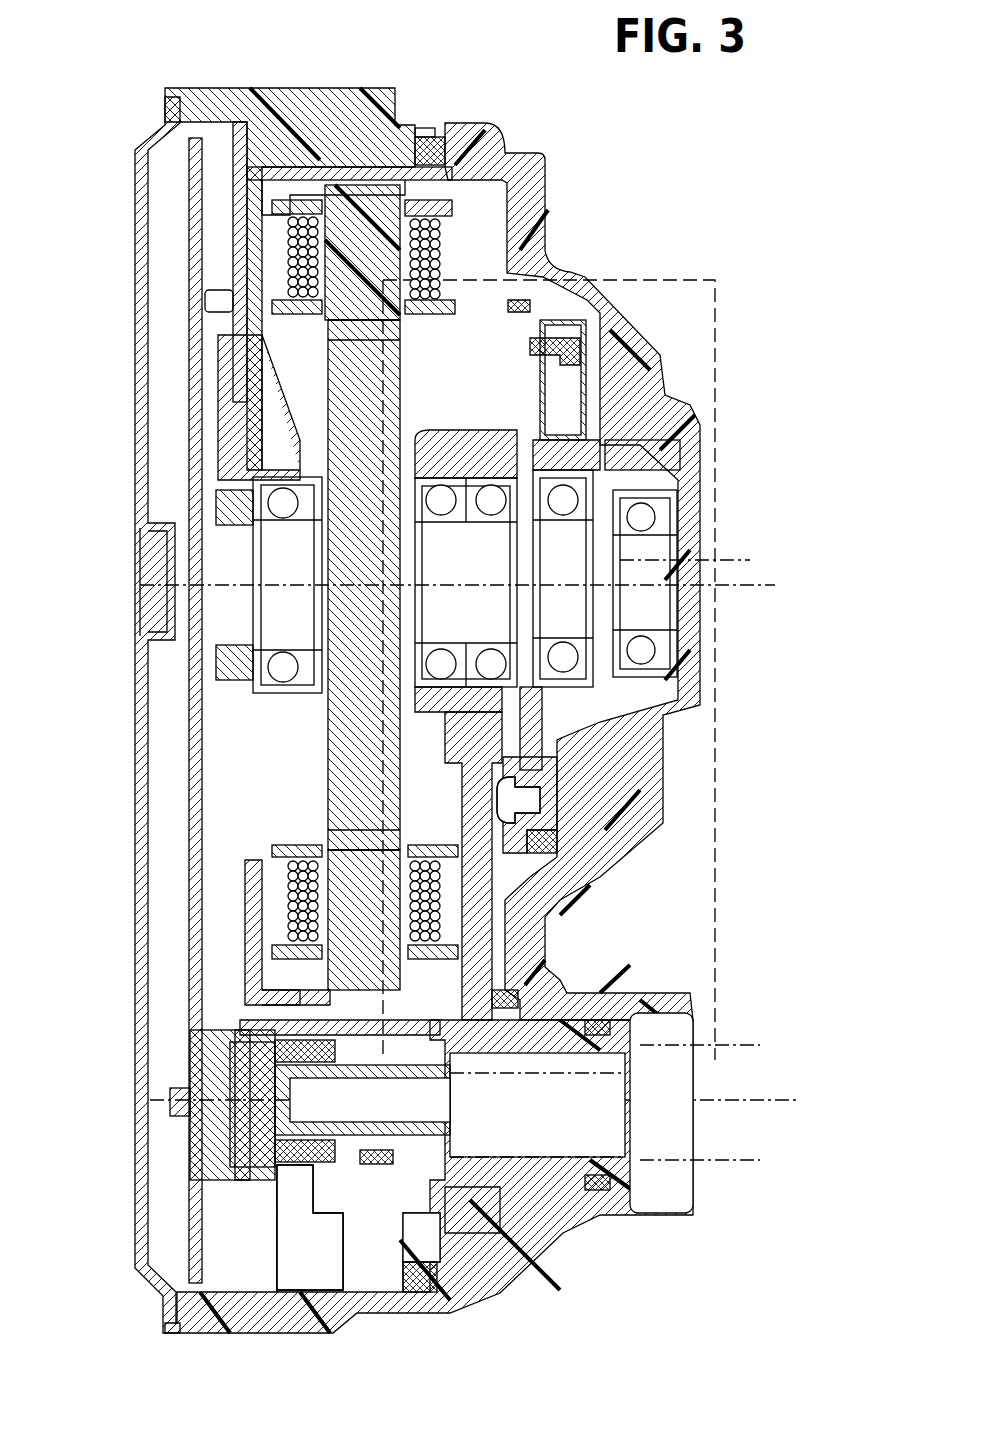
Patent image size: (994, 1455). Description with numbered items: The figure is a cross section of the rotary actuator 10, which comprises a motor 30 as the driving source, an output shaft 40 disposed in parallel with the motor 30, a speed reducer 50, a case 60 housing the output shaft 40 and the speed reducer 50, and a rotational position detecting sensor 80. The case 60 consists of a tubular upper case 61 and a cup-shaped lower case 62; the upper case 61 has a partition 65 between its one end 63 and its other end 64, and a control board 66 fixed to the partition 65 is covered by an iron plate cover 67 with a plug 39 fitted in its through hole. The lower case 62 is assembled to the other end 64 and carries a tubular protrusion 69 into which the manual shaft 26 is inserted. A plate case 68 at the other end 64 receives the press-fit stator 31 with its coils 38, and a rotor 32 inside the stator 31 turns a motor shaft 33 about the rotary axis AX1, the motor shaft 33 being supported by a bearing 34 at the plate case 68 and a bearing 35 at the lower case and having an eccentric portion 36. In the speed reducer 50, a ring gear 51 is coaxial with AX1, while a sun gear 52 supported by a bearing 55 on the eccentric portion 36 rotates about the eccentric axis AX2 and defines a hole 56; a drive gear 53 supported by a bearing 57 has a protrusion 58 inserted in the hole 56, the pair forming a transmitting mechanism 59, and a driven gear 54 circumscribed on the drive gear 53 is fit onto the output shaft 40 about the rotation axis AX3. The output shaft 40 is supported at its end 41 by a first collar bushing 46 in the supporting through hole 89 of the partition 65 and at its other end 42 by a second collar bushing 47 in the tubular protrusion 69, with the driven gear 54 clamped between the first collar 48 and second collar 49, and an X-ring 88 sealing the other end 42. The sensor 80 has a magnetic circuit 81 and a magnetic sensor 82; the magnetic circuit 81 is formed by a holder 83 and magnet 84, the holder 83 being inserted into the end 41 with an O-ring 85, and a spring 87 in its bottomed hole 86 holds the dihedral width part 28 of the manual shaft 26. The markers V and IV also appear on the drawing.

The actuator 10 is at (129, 51).
The manual shaft 26 is at (740, 1150).
The dihedral width part 28 is at (240, 1025).
The motor 30 is at (440, 257).
The stator 31 is at (350, 282).
The rotor 32 is at (350, 790).
The motor shaft 33 is at (275, 548).
The bearing 34 is at (442, 500).
The bearing 35 is at (660, 655).
The eccentric portion 36 is at (665, 522).
The coils 38 is at (300, 235).
The plug 39 is at (150, 580).
The output shaft 40 is at (550, 960).
The end 41 is at (300, 950).
The other end 42 is at (505, 1000).
The first collar bushing 46 is at (350, 1200).
The second collar bushing 47 is at (540, 1185).
The first collar 48 is at (405, 1190).
The second collar 49 is at (520, 1195).
The speed reducer 50 is at (560, 308).
The ring gear 51 is at (590, 392).
The sun gear 52 is at (565, 383).
The drive gear 53 is at (540, 338).
The driven gear 54 is at (480, 887).
The bearing 55 is at (595, 665).
The hole 56 is at (540, 800).
The bearing 57 is at (565, 445).
The protrusion 58 is at (557, 840).
The transmitting mechanism 59 is at (760, 752).
The case 60 is at (465, 40).
The upper case 61 is at (418, 135).
The lower case 62 is at (462, 130).
The one end 63 is at (200, 95).
The other end 64 is at (330, 105).
The partition 65 is at (235, 376).
The control board 66 is at (190, 172).
The plate cover 67 is at (148, 722).
The plate case 68 is at (236, 322).
The tubular protrusion 69 is at (630, 1200).
The rotational position detecting sensor 80 is at (70, 1090).
The magnetic circuit 81 is at (215, 1120).
The magnetic sensor 82 is at (215, 1090).
The holder 83 is at (240, 1190).
The magnet 84 is at (240, 1155).
The O-ring 85 is at (378, 1185).
The bottomed hole 86 is at (285, 1190).
The spring 87 is at (260, 1052).
The X-ring 88 is at (597, 1190).
The supporting through hole 89 is at (320, 990).
The rotary axis AX1 is at (775, 585).
The eccentric axis AX2 is at (640, 578).
The rotation axis AX3 is at (770, 1100).
The view direction V is at (750, 418).
The section line IV is at (715, 1028).